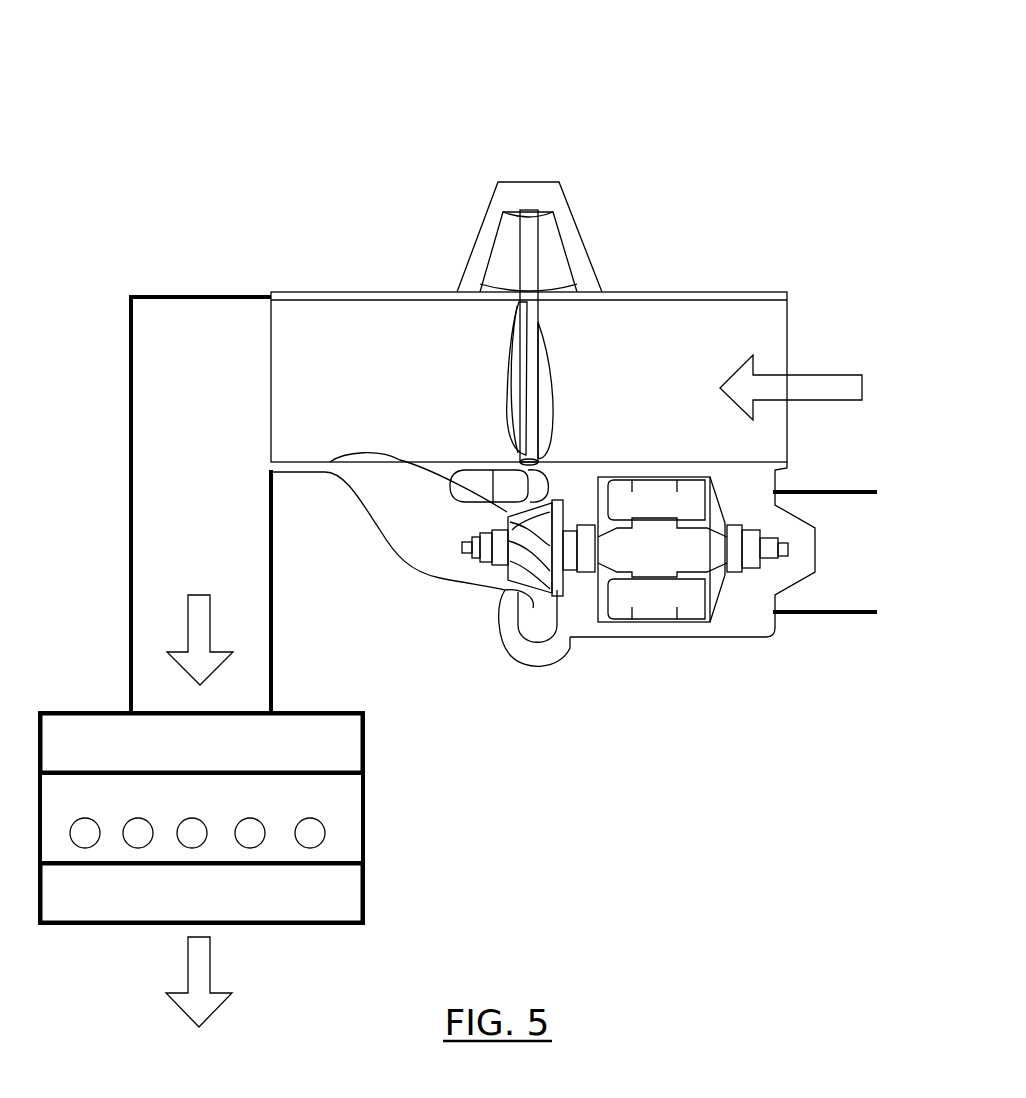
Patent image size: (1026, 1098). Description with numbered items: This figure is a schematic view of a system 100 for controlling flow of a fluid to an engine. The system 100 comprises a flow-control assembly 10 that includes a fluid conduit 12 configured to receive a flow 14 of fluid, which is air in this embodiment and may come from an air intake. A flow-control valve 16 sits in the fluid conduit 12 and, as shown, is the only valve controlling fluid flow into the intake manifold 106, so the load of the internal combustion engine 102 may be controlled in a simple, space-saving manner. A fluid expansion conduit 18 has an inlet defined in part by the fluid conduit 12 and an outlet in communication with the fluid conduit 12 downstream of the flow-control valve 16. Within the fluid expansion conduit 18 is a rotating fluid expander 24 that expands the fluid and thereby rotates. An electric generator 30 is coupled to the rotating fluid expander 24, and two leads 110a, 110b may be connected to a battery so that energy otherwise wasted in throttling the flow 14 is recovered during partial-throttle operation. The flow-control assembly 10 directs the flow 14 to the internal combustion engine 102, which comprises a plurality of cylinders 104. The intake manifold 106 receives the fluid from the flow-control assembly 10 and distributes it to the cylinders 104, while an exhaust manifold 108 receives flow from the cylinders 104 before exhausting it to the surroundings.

The system 100 is at (268, 70).
The flow-control assembly 10 is at (450, 253).
The fluid conduit 12 is at (645, 297).
The flow 14 is at (808, 385).
The flow-control valve 16 is at (520, 290).
The fluid expansion conduit 18 is at (497, 589).
The rotating fluid expander 24 is at (476, 607).
The electric generator 30 is at (632, 596).
The lead 110a is at (817, 490).
The lead 110b is at (815, 613).
The internal combustion engine 102 is at (347, 843).
The cylinders 104 is at (320, 825).
The intake manifold 106 is at (283, 727).
The exhaust manifold 108 is at (347, 910).